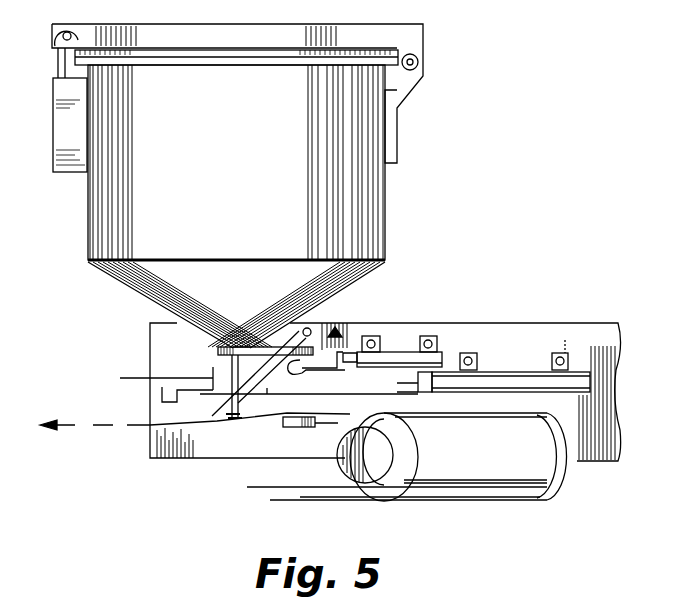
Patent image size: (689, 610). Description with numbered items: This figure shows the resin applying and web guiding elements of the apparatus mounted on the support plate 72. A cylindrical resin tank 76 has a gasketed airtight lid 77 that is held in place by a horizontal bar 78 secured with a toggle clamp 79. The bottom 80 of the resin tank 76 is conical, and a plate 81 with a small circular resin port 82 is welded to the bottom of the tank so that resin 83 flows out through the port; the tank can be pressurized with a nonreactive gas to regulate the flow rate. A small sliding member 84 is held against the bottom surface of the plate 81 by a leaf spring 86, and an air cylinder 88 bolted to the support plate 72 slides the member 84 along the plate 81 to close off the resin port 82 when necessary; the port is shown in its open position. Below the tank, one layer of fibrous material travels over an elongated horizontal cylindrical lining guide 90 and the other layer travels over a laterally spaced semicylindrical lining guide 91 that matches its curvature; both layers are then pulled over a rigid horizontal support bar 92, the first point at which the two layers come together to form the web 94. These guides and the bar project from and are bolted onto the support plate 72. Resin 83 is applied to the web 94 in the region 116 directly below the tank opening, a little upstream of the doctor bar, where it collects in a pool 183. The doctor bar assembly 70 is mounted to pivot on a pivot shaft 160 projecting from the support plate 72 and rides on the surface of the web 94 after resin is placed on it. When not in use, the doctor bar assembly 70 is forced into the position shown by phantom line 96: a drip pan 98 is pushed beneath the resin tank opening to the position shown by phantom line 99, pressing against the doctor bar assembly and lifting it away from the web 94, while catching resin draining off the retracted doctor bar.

The doctor bar assembly 70 is at (347, 324).
The support plate 72 is at (570, 323).
The cylindrical resin tank 76 is at (372, 194).
The gasketed airtight lid 77 is at (330, 60).
The horizontal bar 78 is at (278, 24).
The toggle clamp 79 is at (72, 127).
The bottom of the resin tank 80 is at (128, 281).
The plate 81 is at (258, 340).
The resin port 82 is at (226, 355).
The resin 83 is at (228, 393).
The sliding member 84 is at (310, 375).
The leaf spring 86 is at (307, 368).
The air cylinder 88 is at (440, 350).
The cylindrical lining guide 90 is at (365, 482).
The semicylindrical lining guide 91 is at (590, 352).
The support bar 92 is at (300, 428).
The web 94 is at (157, 427).
The phantom line 96 is at (152, 378).
The drip pan 98 is at (397, 387).
The phantom line 99 is at (162, 401).
The region of the web 116 is at (237, 427).
The pivot shaft 160 is at (320, 328).
The pool 183 is at (237, 418).